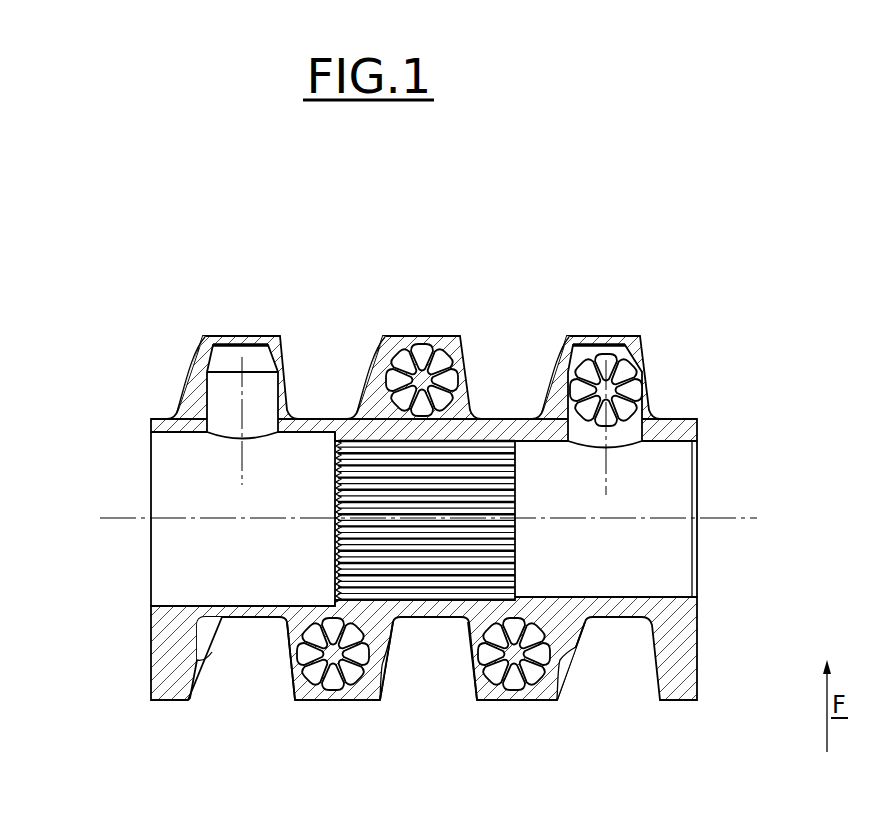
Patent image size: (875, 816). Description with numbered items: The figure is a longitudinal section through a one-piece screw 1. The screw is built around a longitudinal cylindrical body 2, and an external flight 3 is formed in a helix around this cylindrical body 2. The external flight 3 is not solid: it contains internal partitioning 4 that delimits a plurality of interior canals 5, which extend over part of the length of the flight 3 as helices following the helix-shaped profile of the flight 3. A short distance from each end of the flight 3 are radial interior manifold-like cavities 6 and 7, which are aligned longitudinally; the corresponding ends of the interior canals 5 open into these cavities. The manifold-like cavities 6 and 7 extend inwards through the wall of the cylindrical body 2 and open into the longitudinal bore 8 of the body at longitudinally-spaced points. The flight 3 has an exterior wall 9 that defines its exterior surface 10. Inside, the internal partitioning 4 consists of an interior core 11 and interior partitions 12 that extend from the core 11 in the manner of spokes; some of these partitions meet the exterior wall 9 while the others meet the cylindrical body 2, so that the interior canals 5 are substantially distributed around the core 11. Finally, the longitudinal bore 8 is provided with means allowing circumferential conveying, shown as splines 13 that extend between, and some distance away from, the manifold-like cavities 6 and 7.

The one-piece screw 1 is at (157, 322).
The longitudinal cylindrical body 2 is at (507, 432).
The external flight 3 is at (426, 328).
The internal partitioning 4 is at (358, 679).
The interior canals 5 is at (305, 653).
The manifold-like cavity 6 is at (258, 392).
The manifold-like cavity 7 is at (627, 428).
The longitudinal bore 8 is at (685, 479).
The exterior wall 9 is at (558, 645).
The exterior surface 10 is at (559, 686).
The interior core 11 is at (502, 650).
The interior partitions 12 is at (547, 680).
The splines 13 is at (366, 551).